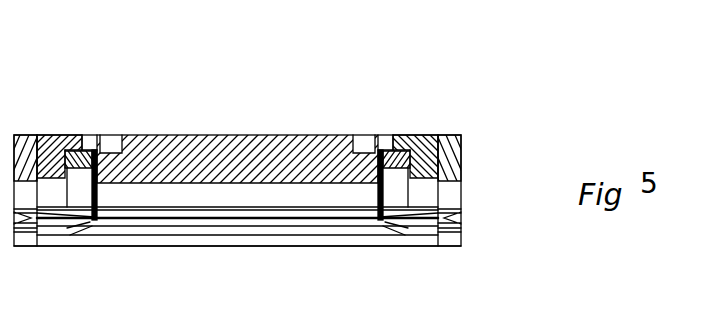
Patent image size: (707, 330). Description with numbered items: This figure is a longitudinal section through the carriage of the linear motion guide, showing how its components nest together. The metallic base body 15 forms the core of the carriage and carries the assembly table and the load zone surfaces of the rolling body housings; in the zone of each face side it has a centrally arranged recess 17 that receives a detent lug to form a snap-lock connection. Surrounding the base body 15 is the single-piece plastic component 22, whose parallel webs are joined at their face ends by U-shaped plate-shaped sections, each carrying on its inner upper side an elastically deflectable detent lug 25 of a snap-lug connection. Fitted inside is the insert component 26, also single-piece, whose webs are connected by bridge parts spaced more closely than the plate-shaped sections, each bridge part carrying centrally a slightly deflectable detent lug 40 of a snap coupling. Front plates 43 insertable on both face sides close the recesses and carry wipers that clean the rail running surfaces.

The base body 15 is at (270, 134).
The recess 17 is at (117, 132).
The single-piece plastic component 22 is at (398, 241).
The detent lug 25 is at (52, 135).
The insert component 26 is at (240, 192).
The detent lug 40 is at (98, 137).
The front plate 43 is at (27, 135).